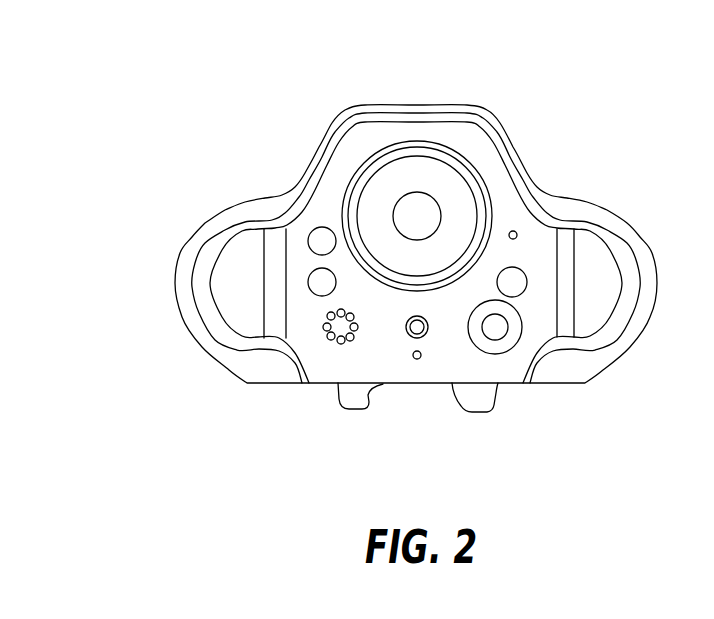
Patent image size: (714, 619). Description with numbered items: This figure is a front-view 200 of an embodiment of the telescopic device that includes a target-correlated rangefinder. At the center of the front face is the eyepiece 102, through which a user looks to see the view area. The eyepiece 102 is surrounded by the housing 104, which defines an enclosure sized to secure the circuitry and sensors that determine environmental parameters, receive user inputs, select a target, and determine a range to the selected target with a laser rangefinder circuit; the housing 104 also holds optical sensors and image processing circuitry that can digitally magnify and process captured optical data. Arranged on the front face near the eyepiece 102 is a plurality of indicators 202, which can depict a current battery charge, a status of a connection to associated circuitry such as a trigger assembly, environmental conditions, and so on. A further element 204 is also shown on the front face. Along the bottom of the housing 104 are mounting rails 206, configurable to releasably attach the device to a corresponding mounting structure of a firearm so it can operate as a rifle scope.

The front-view 200 is at (156, 63).
The eyepiece 102 is at (418, 155).
The housing 104 is at (217, 222).
The indicators 202 is at (412, 355).
The button 204 is at (520, 327).
The mounting rails 206 is at (481, 392).